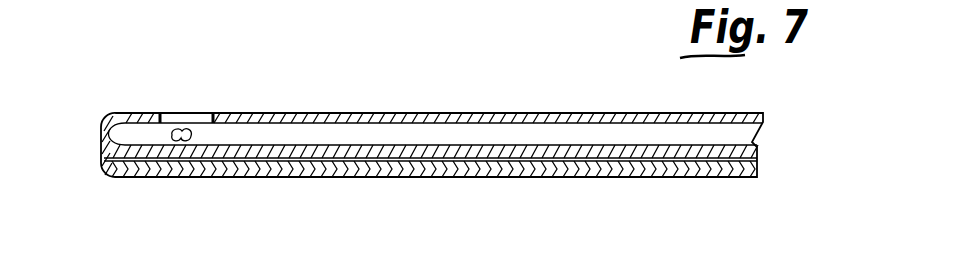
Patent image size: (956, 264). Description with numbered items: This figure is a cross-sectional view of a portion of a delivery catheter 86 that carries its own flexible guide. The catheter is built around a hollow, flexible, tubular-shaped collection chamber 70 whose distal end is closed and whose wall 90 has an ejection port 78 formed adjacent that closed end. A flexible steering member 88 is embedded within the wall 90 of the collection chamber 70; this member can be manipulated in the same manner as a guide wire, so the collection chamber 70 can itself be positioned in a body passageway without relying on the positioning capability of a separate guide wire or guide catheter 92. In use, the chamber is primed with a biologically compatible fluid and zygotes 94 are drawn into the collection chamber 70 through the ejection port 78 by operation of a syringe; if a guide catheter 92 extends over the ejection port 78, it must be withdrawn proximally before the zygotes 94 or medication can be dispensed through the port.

The delivery catheter 86 is at (560, 78).
The collection chamber 70 is at (310, 133).
The ejection port 78 is at (198, 113).
The wall 90 is at (430, 113).
The flexible steering member 88 is at (287, 165).
The guide catheter 92 is at (517, 178).
The zygotes 94 is at (175, 128).